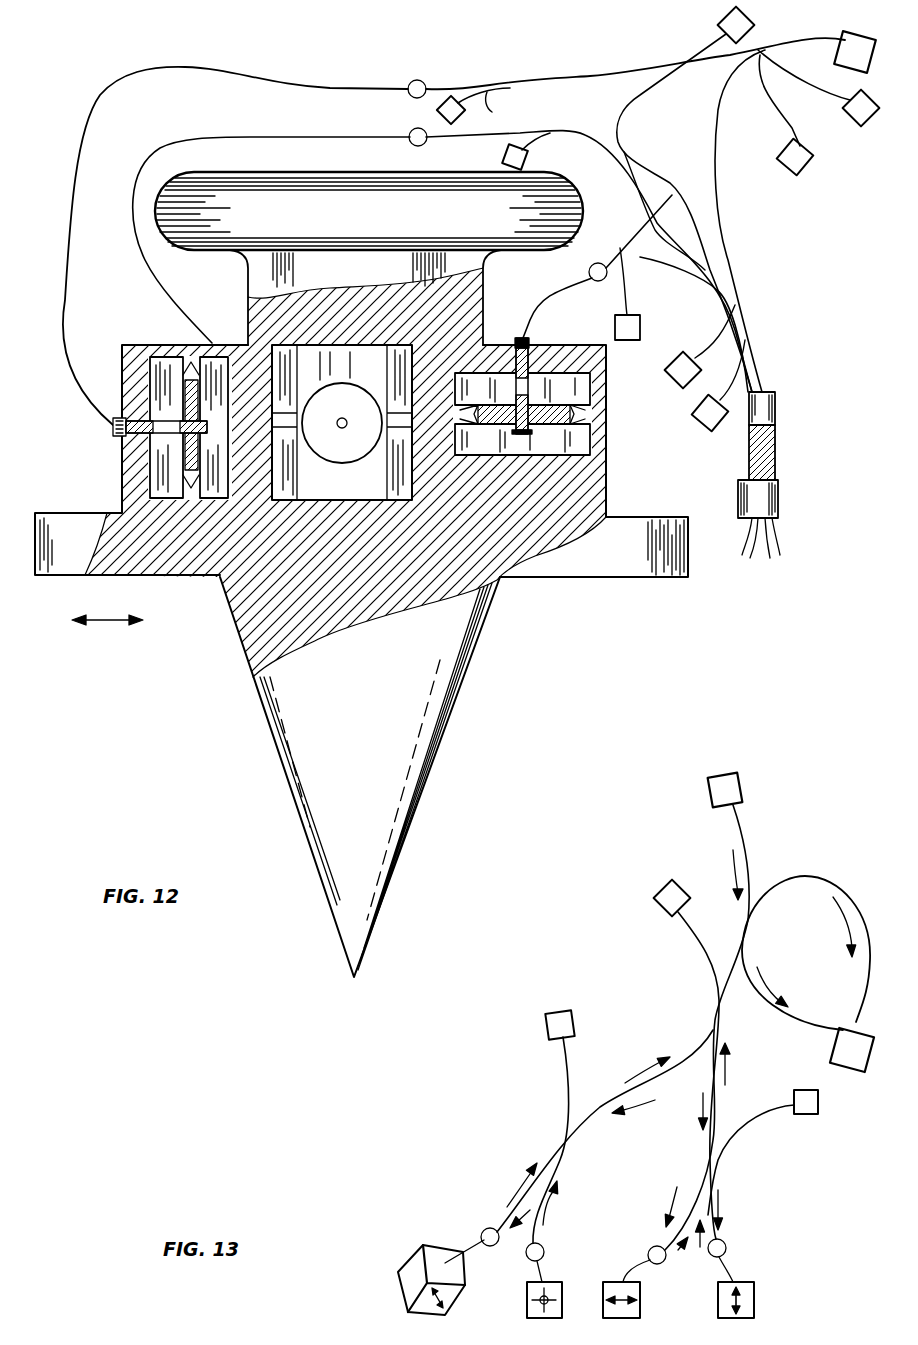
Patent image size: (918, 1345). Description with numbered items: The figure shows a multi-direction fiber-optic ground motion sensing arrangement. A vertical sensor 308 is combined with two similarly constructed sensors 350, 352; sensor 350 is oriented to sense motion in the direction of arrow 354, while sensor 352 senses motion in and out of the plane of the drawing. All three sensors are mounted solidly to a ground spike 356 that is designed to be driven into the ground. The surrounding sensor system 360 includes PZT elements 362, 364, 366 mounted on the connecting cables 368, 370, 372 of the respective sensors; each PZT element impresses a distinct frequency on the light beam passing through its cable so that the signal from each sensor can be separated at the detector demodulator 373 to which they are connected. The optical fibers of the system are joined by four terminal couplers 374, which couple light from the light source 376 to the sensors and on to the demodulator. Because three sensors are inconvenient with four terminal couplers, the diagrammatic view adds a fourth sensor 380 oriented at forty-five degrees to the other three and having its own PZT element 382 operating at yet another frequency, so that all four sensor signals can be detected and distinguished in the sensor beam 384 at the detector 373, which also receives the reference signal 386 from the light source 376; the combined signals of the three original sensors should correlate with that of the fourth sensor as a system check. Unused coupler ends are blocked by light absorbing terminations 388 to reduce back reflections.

In FIG. 12, the vertical sensor 308 is at (590, 443).
In FIG. 13, the vertical sensor 308 is at (723, 1317).
In FIG. 12, the sensor 350 is at (150, 453).
In FIG. 13, the sensor 350 is at (620, 1320).
In FIG. 12, the sensor 352 is at (265, 345).
In FIG. 13, the sensor 352 is at (530, 1314).
In FIG. 12, the arrow 354 is at (110, 620).
In FIG. 12, the ground spike 356 is at (455, 692).
In FIG. 12, the sensor system 360 is at (748, 255).
In FIG. 12, the PZT element 362 is at (589, 271).
In FIG. 13, the PZT element 362 is at (726, 1249).
In FIG. 12, the PZT element 364 is at (424, 82).
In FIG. 13, the PZT element 364 is at (652, 1247).
In FIG. 12, the PZT element 366 is at (425, 143).
In FIG. 13, the PZT element 366 is at (544, 1251).
In FIG. 12, the connecting cable 368 is at (537, 307).
In FIG. 12, the connecting cable 370 is at (283, 88).
In FIG. 12, the connecting cable 372 is at (330, 137).
In FIG. 12, the detector demodulator 373 is at (778, 500).
In FIG. 13, the detector demodulator 373 is at (834, 1055).
In FIG. 12, the four terminal couplers 374 is at (547, 133).
In FIG. 12, the light source 376 is at (870, 66).
In FIG. 13, the light source 376 is at (744, 793).
In FIG. 13, the fourth sensor 380 is at (400, 1287).
In FIG. 13, the PZT element 382 is at (484, 1230).
In FIG. 13, the sensor beam 384 is at (840, 918).
In FIG. 13, the reference signal 386 is at (762, 962).
In FIG. 13, the light absorbing terminations 388 is at (668, 912).